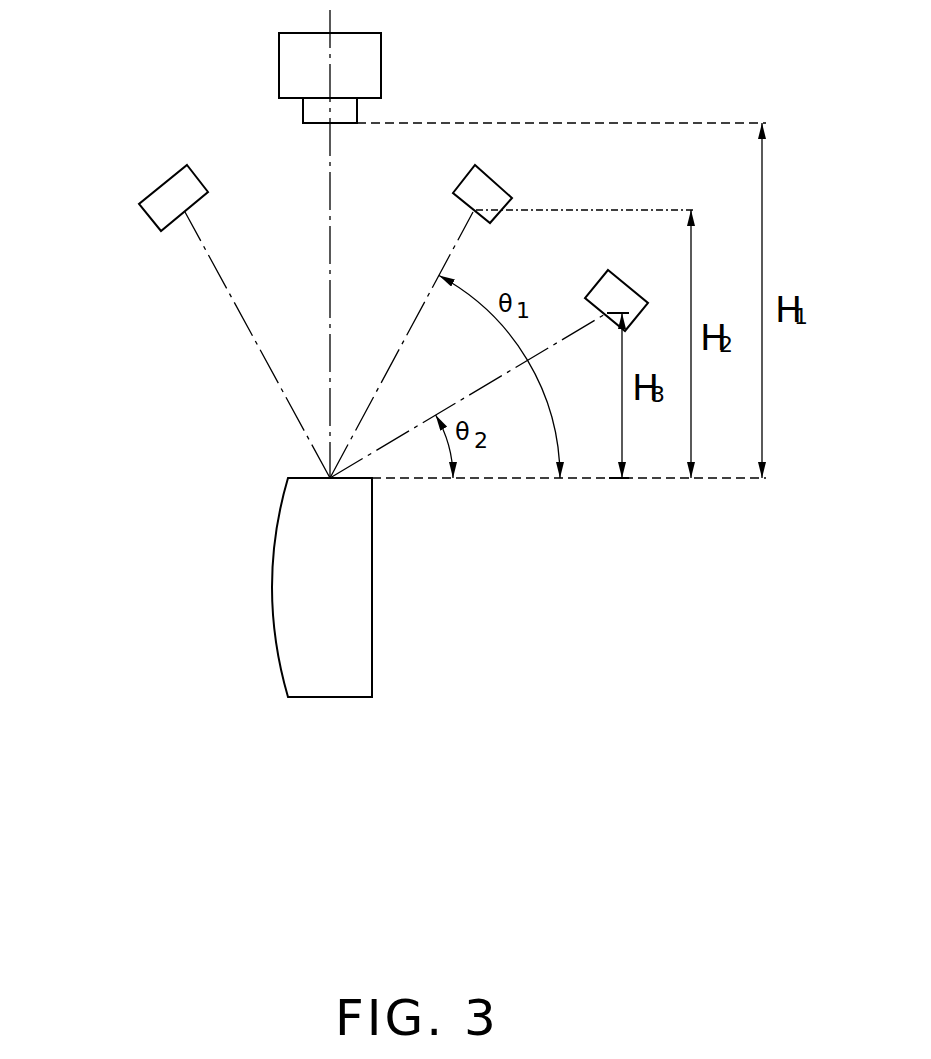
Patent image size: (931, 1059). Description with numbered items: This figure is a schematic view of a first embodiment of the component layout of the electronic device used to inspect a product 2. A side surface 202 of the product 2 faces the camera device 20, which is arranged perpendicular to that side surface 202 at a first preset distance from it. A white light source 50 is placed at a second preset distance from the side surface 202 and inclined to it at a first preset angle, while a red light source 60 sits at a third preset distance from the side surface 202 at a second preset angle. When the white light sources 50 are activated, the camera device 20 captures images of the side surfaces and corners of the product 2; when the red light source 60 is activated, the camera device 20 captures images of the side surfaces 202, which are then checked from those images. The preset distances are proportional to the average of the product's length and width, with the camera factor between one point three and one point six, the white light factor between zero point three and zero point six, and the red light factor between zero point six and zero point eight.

The camera device 20 is at (357, 63).
The white light source 50 is at (177, 187).
The red light source 60 is at (607, 290).
The product 2 is at (310, 620).
The side surface 202 is at (305, 477).